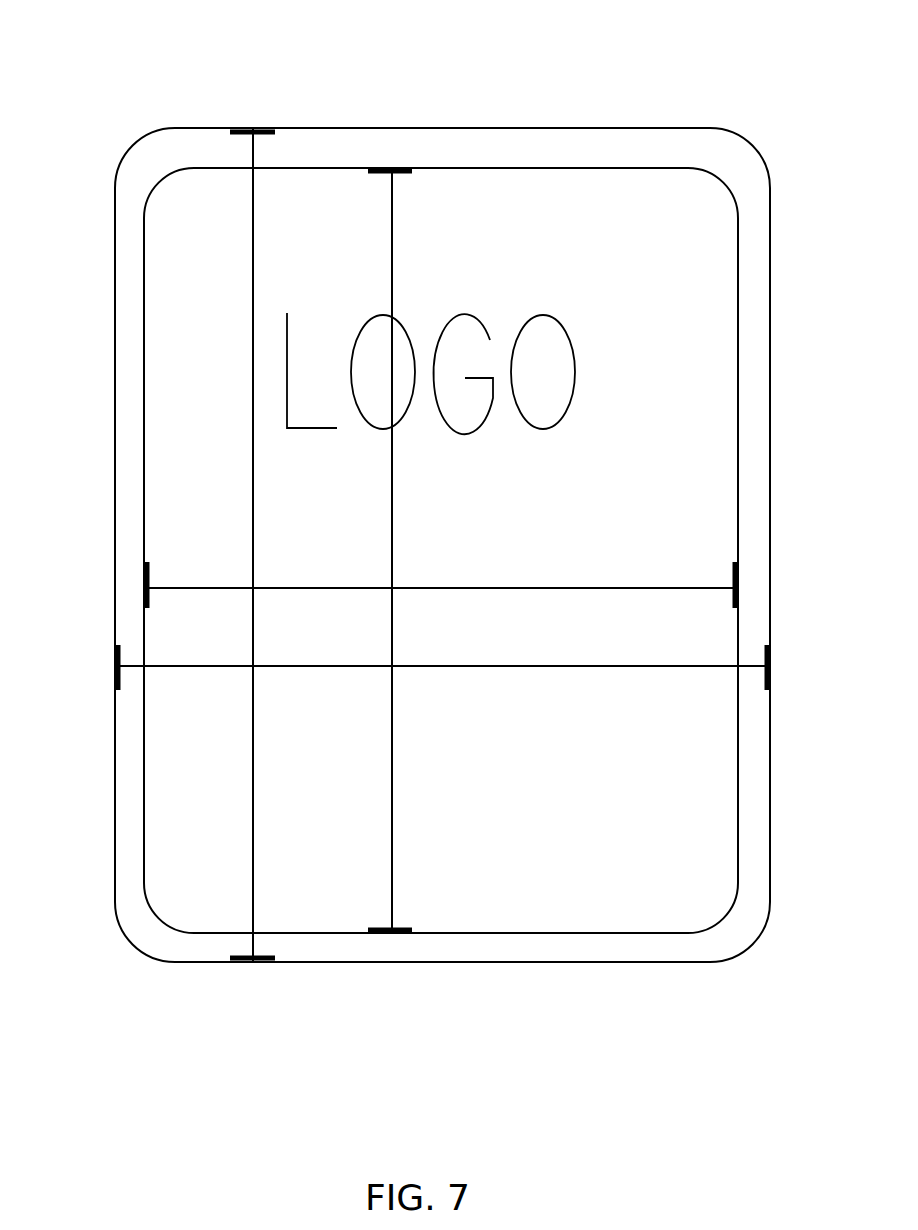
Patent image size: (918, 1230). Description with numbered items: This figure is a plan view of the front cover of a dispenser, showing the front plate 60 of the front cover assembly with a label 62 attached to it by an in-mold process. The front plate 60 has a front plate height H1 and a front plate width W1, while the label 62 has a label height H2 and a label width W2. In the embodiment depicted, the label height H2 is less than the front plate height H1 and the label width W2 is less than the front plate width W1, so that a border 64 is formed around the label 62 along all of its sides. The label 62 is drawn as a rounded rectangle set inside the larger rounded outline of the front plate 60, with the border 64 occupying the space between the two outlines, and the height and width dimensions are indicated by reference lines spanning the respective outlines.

The front plate 60 is at (408, 486).
The label 62 is at (178, 413).
The border 64 is at (185, 142).
The front plate height H1 is at (252, 290).
The label height H2 is at (392, 745).
The front plate width W1 is at (585, 666).
The label width W2 is at (437, 587).